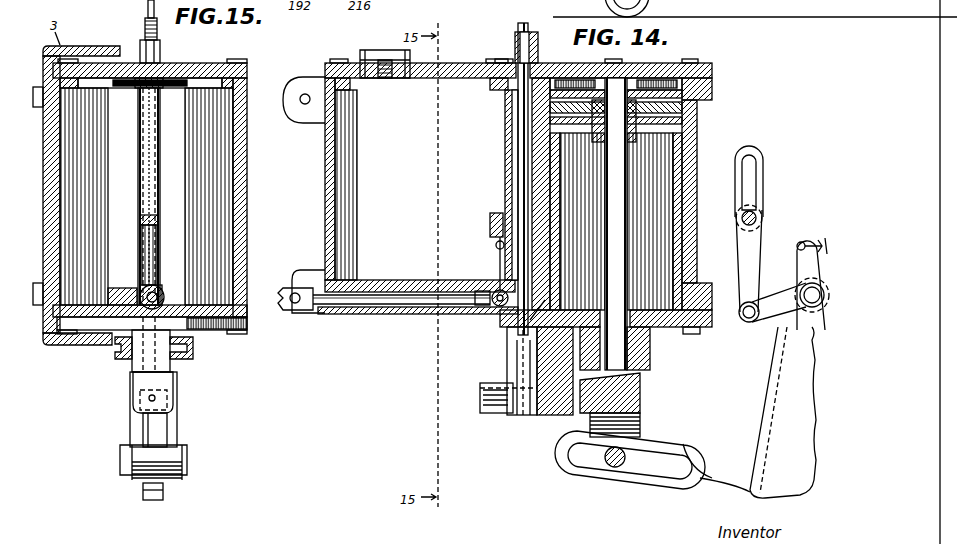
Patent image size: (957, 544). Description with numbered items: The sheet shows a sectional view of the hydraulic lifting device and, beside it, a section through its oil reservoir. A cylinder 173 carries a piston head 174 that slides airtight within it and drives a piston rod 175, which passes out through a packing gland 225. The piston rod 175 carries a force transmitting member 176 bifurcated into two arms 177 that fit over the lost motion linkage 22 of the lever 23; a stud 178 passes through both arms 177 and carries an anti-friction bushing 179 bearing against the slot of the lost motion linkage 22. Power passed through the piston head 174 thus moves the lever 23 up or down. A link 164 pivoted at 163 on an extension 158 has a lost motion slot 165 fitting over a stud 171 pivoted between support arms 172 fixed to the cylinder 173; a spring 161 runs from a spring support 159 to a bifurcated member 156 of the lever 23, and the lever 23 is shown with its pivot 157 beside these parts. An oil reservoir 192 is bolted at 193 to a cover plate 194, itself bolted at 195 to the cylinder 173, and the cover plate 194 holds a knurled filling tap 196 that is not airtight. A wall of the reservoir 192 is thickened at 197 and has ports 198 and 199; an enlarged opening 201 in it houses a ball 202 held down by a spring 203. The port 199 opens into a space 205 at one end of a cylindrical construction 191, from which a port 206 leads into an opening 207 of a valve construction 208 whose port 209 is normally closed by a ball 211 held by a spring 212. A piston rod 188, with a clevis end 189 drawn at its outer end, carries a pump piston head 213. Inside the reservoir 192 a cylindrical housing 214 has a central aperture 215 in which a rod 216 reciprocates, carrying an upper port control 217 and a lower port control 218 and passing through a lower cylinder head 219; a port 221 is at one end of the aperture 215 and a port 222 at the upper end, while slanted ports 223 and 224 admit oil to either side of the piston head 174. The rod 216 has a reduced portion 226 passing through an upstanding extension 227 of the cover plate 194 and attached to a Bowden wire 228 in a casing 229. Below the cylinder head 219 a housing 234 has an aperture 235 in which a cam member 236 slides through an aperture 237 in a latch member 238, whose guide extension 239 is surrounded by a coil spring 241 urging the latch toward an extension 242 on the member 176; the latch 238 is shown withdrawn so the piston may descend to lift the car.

In FIG. 14, the lost motion linkage 22 is at (661, 478).
In FIG. 15, the lever 23 is at (150, 432).
In FIG. 14, the lever 23 is at (712, 494).
In FIG. 14, the bifurcated member 156 is at (790, 382).
In FIG. 14, the pivot 157 is at (812, 308).
In FIG. 14, the extension 158 is at (758, 328).
In FIG. 14, the spring support 159 is at (797, 266).
In FIG. 14, the spring 161 is at (822, 240).
In FIG. 14, the pivot 163 is at (742, 320).
In FIG. 14, the link member 164 is at (755, 250).
In FIG. 14, the lost motion slot 165 is at (764, 186).
In FIG. 14, the stud 171 is at (757, 217).
In FIG. 14, the support arms 172 is at (700, 197).
In FIG. 14, the cylinder 173 is at (700, 140).
In FIG. 14, the piston head 174 is at (705, 94).
In FIG. 14, the piston rod 175 is at (620, 212).
In FIG. 14, the force transmitting member 176 is at (640, 397).
In FIG. 15, the bifurcated arms 177 is at (172, 432).
In FIG. 14, the bifurcated arms 177 is at (645, 425).
In FIG. 15, the stud 178 is at (187, 458).
In FIG. 14, the anti-friction bushing 179 is at (603, 462).
In FIG. 15, the piston rod 188 is at (164, 296).
In FIG. 14, the piston rod 188 is at (362, 306).
In FIG. 14, the clevis 189 is at (318, 312).
In FIG. 15, the cylindrical construction 191 is at (165, 280).
In FIG. 14, the cylindrical construction 191 is at (390, 314).
In FIG. 15, the oil reservoir 192 is at (247, 128).
In FIG. 14, the oil reservoir 192 is at (330, 190).
In FIG. 15, the bolts 193 is at (241, 60).
In FIG. 14, the bolts 193 is at (339, 59).
In FIG. 15, the cover plate 194 is at (215, 63).
In FIG. 14, the cover plate 194 is at (641, 70).
In FIG. 14, the bolts 195 is at (695, 59).
In FIG. 14, the filling tap 196 is at (388, 50).
In FIG. 15, the thickened wall portion 197 is at (165, 218).
In FIG. 14, the thickened wall portion 197 is at (496, 245).
In FIG. 14, the port 198 is at (497, 213).
In FIG. 14, the port 199 is at (499, 265).
In FIG. 14, the enlarged opening 201 is at (492, 228).
In FIG. 15, the ball 202 is at (163, 241).
In FIG. 14, the ball 202 is at (495, 243).
In FIG. 14, the spring 203 is at (492, 220).
In FIG. 14, the space 205 is at (500, 314).
In FIG. 14, the port 206 is at (494, 291).
In FIG. 15, the opening 207 is at (116, 287).
In FIG. 15, the valve construction 208 is at (108, 290).
In FIG. 15, the port 209 is at (110, 297).
In FIG. 14, the port 209 is at (486, 205).
In FIG. 15, the ball 211 is at (92, 350).
In FIG. 15, the spring 212 is at (128, 270).
In FIG. 14, the piston head 213 is at (455, 314).
In FIG. 15, the cylindrical housing 214 is at (162, 142).
In FIG. 14, the cylindrical housing 214 is at (508, 110).
In FIG. 14, the central aperture 215 is at (514, 128).
In FIG. 15, the rod 216 is at (138, 162).
In FIG. 14, the rod 216 is at (522, 148).
In FIG. 14, the upper port control 217 is at (545, 62).
In FIG. 14, the lower port control 218 is at (550, 250).
In FIG. 15, the lower cylinder head 219 is at (248, 327).
In FIG. 14, the lower cylinder head 219 is at (656, 310).
In FIG. 14, the port 221 is at (518, 40).
In FIG. 15, the port 222 is at (140, 96).
In FIG. 14, the port 222 is at (490, 76).
In FIG. 14, the slanted port 223 is at (548, 72).
In FIG. 14, the slanted port 224 is at (555, 300).
In FIG. 15, the packing gland 225 is at (193, 360).
In FIG. 14, the packing gland 225 is at (650, 360).
In FIG. 14, the reduced diameter portion 226 is at (543, 26).
In FIG. 15, the upstanding extension 227 is at (160, 47).
In FIG. 15, the Bowden wire 228 is at (148, 5).
In FIG. 14, the Bowden wire 228 is at (530, 30).
In FIG. 15, the casing 229 is at (145, 25).
In FIG. 15, the housing 234 is at (190, 340).
In FIG. 14, the housing 234 is at (512, 374).
In FIG. 14, the aperture 235 is at (520, 363).
In FIG. 15, the cam member 236 is at (165, 375).
In FIG. 14, the cam member 236 is at (524, 418).
In FIG. 14, the aperture 237 is at (527, 415).
In FIG. 15, the latch member 238 is at (175, 400).
In FIG. 14, the latch member 238 is at (560, 415).
In FIG. 15, the guide extension 239 is at (149, 398).
In FIG. 14, the guide extension 239 is at (486, 400).
In FIG. 14, the coil spring 241 is at (490, 390).
In FIG. 14, the extension 242 is at (640, 405).